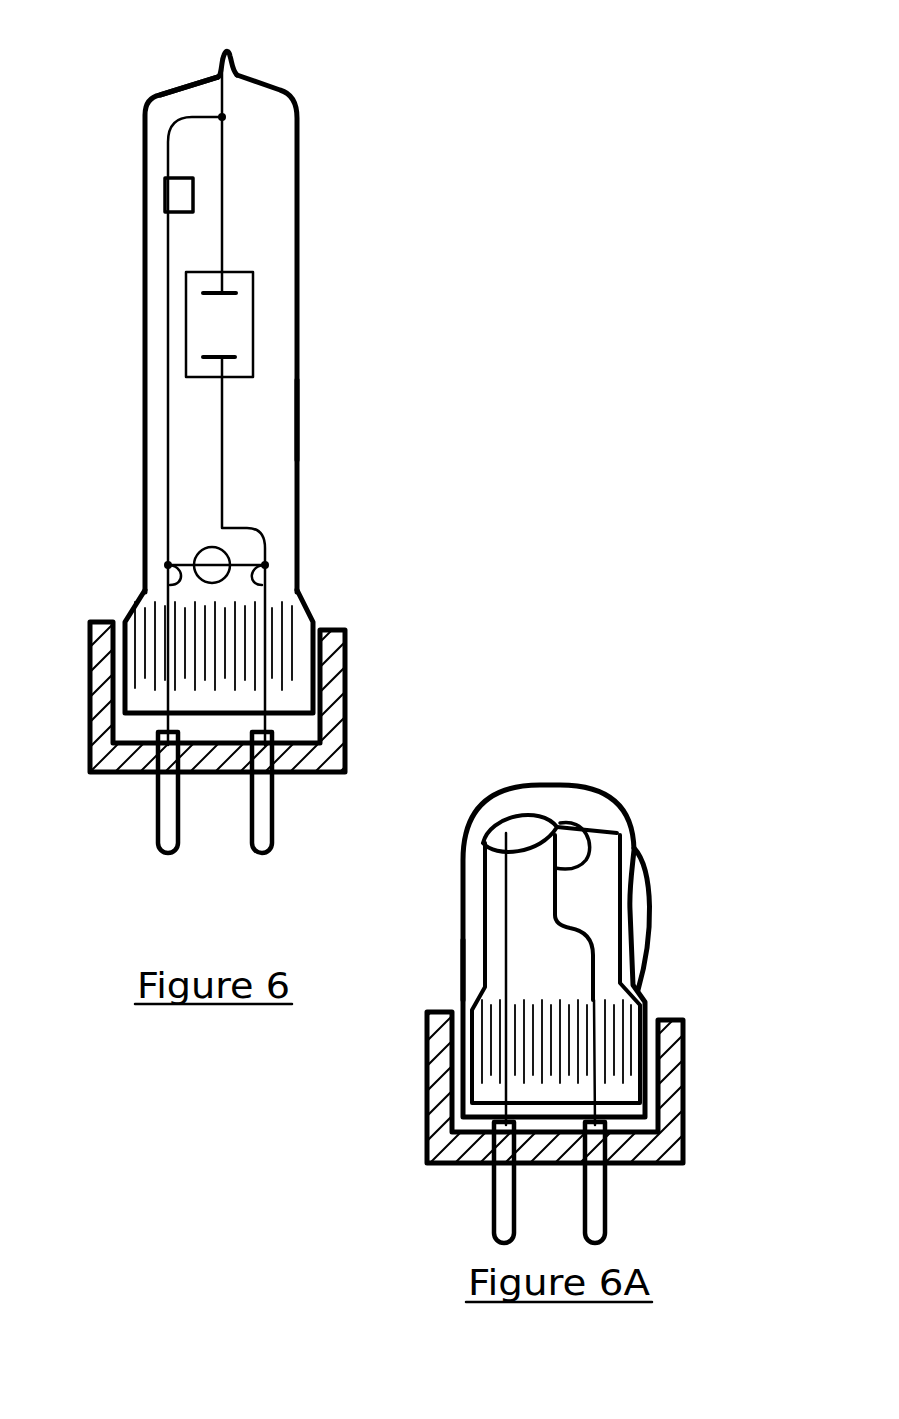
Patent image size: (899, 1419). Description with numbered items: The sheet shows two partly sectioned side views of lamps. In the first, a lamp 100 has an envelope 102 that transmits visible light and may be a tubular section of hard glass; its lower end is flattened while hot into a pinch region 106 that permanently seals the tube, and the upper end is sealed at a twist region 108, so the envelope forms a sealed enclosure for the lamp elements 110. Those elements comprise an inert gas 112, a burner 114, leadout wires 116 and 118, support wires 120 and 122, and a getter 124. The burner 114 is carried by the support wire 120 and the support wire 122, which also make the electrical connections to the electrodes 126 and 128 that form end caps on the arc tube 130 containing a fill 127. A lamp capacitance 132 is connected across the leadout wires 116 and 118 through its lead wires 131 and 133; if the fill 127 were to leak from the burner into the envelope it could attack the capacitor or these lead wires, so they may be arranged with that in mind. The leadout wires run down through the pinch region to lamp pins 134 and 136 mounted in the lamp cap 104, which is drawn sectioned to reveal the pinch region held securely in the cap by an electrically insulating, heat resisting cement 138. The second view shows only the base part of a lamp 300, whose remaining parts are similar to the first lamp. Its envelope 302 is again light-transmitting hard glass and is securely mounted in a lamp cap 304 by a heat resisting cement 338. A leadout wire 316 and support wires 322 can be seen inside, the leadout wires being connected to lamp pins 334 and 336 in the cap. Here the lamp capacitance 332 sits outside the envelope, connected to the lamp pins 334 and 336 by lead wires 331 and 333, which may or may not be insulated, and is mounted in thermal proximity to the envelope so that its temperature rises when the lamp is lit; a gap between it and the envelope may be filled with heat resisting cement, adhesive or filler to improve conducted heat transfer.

In FIG. 6, the lamp 100 is at (450, 607).
In FIG. 6, the envelope 102 is at (297, 128).
In FIG. 6, the lamp cap 104 is at (330, 712).
In FIG. 6, the pinch region 106 is at (274, 638).
In FIG. 6, the twist region 108 is at (229, 50).
In FIG. 6, the lamp elements 110 is at (256, 218).
In FIG. 6, the inert gas 112 is at (272, 425).
In FIG. 6, the burner 114 is at (256, 311).
In FIG. 6, the leadout wire 116 is at (166, 418).
In FIG. 6, the leadout wire 118 is at (262, 522).
In FIG. 6, the support wire 120 is at (214, 98).
In FIG. 6, the support wire 122 is at (220, 464).
In FIG. 6, the getter 124 is at (178, 193).
In FIG. 6, the electrode 126 is at (205, 296).
In FIG. 6, the fill 127 is at (237, 322).
In FIG. 6, the electrode 128 is at (204, 355).
In FIG. 6, the arc tube 130 is at (254, 346).
In FIG. 6, the lead wire 131 is at (170, 585).
In FIG. 6, the lamp capacitance 132 is at (207, 562).
In FIG. 6, the lead wire 133 is at (262, 585).
In FIG. 6, the lamp pin 134 is at (162, 842).
In FIG. 6, the lamp pin 136 is at (258, 835).
In FIG. 6, the heat resisting cement 138 is at (293, 728).
In FIG. 6A, the lamp 300 is at (348, 1189).
In FIG. 6A, the envelope 302 is at (463, 940).
In FIG. 6A, the lamp cap 304 is at (678, 1085).
In FIG. 6A, the leadout wire 316 is at (500, 899).
In FIG. 6A, the support wires 322 is at (578, 822).
In FIG. 6A, the lead wire 331 is at (463, 965).
In FIG. 6A, the lamp capacitance 332 is at (650, 898).
In FIG. 6A, the lead wire 333 is at (650, 985).
In FIG. 6A, the lamp pin 334 is at (502, 1200).
In FIG. 6A, the lamp pin 336 is at (600, 1207).
In FIG. 6A, the heat resisting cement 338 is at (462, 1123).